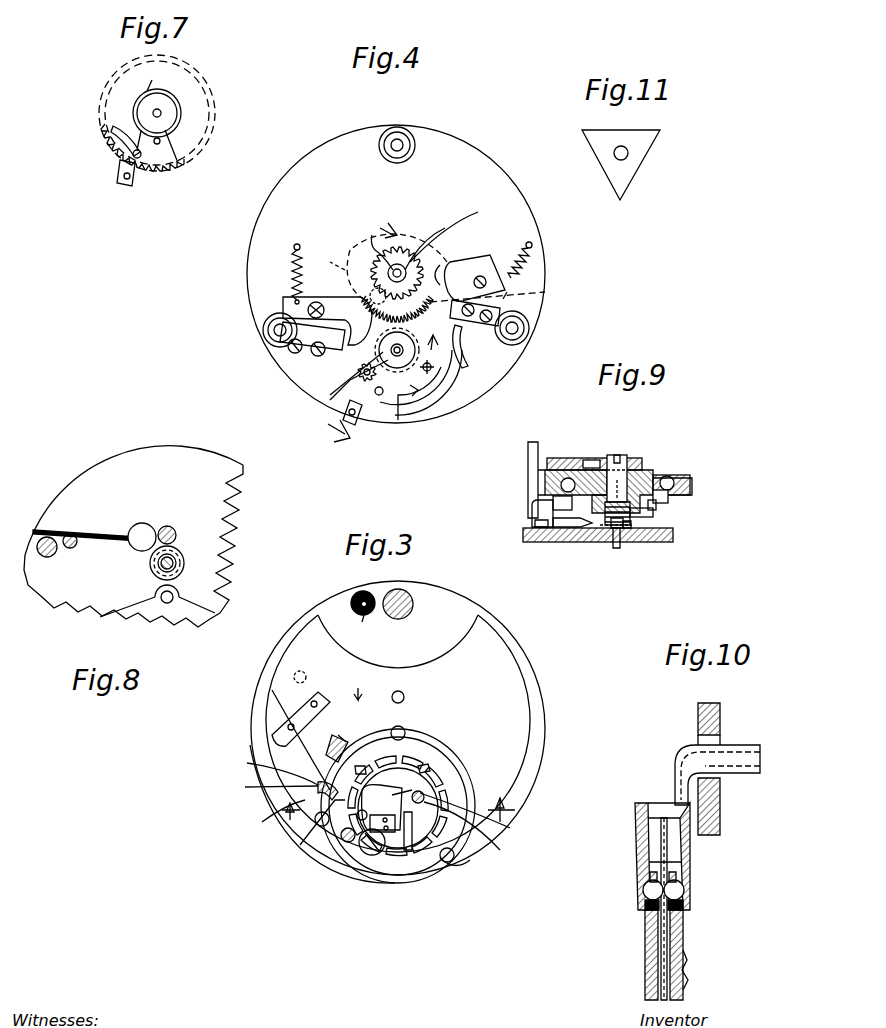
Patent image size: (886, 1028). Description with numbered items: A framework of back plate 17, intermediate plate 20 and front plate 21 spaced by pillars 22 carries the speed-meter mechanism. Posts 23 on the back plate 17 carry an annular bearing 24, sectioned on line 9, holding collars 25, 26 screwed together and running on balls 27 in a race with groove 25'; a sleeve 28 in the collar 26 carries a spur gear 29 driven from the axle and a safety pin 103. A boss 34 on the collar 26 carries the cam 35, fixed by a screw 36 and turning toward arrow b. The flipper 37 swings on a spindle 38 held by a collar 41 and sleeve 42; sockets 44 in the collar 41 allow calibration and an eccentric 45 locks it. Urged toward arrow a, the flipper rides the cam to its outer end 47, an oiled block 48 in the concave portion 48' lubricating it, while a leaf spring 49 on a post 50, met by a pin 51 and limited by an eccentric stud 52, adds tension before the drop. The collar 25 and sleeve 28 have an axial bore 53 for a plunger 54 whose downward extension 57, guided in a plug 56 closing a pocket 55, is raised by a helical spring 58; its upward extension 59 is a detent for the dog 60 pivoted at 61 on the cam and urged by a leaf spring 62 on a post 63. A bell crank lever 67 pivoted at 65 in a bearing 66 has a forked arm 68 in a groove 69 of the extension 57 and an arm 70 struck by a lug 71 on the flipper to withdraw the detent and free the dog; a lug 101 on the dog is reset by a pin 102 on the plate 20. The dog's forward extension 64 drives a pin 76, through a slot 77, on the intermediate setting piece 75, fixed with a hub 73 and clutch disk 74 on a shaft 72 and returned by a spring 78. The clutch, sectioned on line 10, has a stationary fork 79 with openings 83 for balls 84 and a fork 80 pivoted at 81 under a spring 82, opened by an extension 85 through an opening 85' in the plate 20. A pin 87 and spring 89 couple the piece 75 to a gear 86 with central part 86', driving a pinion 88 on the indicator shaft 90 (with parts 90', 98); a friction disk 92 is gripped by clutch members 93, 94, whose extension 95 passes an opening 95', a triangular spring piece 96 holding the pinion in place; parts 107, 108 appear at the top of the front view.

In FIG. 3, the section line 9— 9 is at (398, 814).
In FIG. 4, the section line 10— 10 is at (368, 337).
In FIG. 8, the back plate 17 is at (188, 452).
In FIG. 3, the back plate 17 is at (540, 700).
In FIG. 4, the intermediate plate 20 is at (495, 165).
In FIG. 10, the intermediate plate 20 is at (720, 810).
In FIG. 4, the front plate 21 is at (381, 294).
In FIG. 4, the pillars 22 is at (415, 143).
In FIG. 3, the pillars 22 is at (413, 604).
In FIG. 8, the posts 23 is at (170, 602).
In FIG. 3, the posts 23 is at (403, 728).
In FIG. 9, the annular bearing 24 is at (692, 486).
In FIG. 8, the annular bearing 24 is at (140, 610).
In FIG. 3, the annular bearing 24 is at (440, 752).
In FIG. 9, the collar 25 is at (620, 468).
In FIG. 3, the collar 25 is at (418, 864).
In FIG. 9, the V-shaped groove 25' is at (639, 504).
In FIG. 9, the collar 26 is at (660, 500).
In FIG. 9, the balls 27 is at (568, 448).
In FIG. 3, the balls 27 is at (448, 790).
In FIG. 9, the sleeve 28 is at (645, 515).
In FIG. 9, the spur gear 29 is at (656, 506).
In FIG. 9, the boss 34 is at (620, 456).
In FIG. 3, the boss 34 is at (484, 811).
In FIG. 9, the cam 35 is at (580, 470).
In FIG. 3, the cam 35 is at (340, 815).
In FIG. 3, the screw 36 is at (345, 800).
In FIG. 3, the flipper 37 is at (505, 650).
In FIG. 8, the spindle 38 is at (172, 568).
In FIG. 3, the spindle 38 is at (403, 693).
In FIG. 8, the collar 41 is at (184, 563).
In FIG. 8, the sleeve 42 is at (158, 563).
In FIG. 8, the peripheral sockets 44 is at (178, 553).
In FIG. 8, the eccentric 45 is at (171, 526).
In FIG. 3, the outer end of cam surface 47 is at (322, 800).
In FIG. 3, the block 48 is at (323, 746).
In FIG. 3, the wedge edge 48' is at (338, 726).
In FIG. 8, the leaf spring 49 is at (100, 533).
In FIG. 8, the post 50 is at (142, 523).
In FIG. 8, the pin 51 is at (76, 546).
In FIG. 3, the pin 51 is at (306, 677).
In FIG. 8, the stud 52 is at (47, 558).
In FIG. 9, the axial bore 53 is at (650, 462).
In FIG. 9, the plunger 54 is at (596, 455).
In FIG. 9, the pocket 55 is at (603, 510).
In FIG. 9, the plug 56 is at (623, 522).
In FIG. 9, the downward extension 57 is at (617, 548).
In FIG. 9, the helical spring 58 is at (606, 528).
In FIG. 9, the upward extension (detent) 59 is at (617, 456).
In FIG. 3, the upward extension (detent) 59 is at (412, 790).
In FIG. 9, the dog 60 is at (610, 470).
In FIG. 3, the dog 60 is at (370, 855).
In FIG. 3, the pivot 61 is at (385, 834).
In FIG. 3, the leaf spring 62 is at (380, 788).
In FIG. 3, the post 63 is at (360, 820).
In FIG. 3, the forward extension 64 is at (348, 842).
In FIG. 9, the pivot 65 is at (540, 527).
In FIG. 9, the bearing 66 is at (543, 510).
In FIG. 3, the bearing 66 is at (274, 812).
In FIG. 9, the bell crank lever 67 is at (528, 495).
In FIG. 9, the arm 68 is at (570, 527).
In FIG. 9, the peripheral groove 69 is at (629, 526).
In FIG. 9, the arm 70 is at (528, 460).
In FIG. 3, the arm 70 is at (273, 787).
In FIG. 3, the lug 71 is at (275, 738).
In FIG. 7, the shaft 72 is at (172, 152).
In FIG. 4, the shaft 72 is at (397, 368).
In FIG. 4, the hub 73 is at (340, 388).
In FIG. 4, the clutch disk 74 is at (436, 366).
In FIG. 10, the clutch disk 74 is at (667, 930).
In FIG. 7, the intermediate setting piece 75 is at (150, 133).
In FIG. 4, the intermediate setting piece 75 is at (382, 432).
In FIG. 7, the pin 76 is at (123, 184).
In FIG. 4, the pin 76 is at (355, 425).
In FIG. 3, the pin 76 is at (274, 768).
In FIG. 4, the slot 77 is at (420, 395).
In FIG. 4, the spring 78 is at (430, 392).
In FIG. 4, the stationary fork 79 is at (295, 355).
In FIG. 10, the stationary fork 79 is at (687, 975).
In FIG. 4, the pivoted fork 80 is at (340, 296).
In FIG. 10, the pivoted fork 80 is at (635, 810).
In FIG. 4, the pivot 81 is at (318, 300).
In FIG. 4, the spring 82 is at (293, 272).
In FIG. 10, the openings 83 is at (683, 903).
In FIG. 10, the clutch balls 84 is at (643, 890).
In FIG. 4, the extension 85 is at (389, 265).
In FIG. 3, the extension 85 is at (368, 745).
In FIG. 10, the extension 85 is at (704, 774).
In FIG. 4, the lever end 85' is at (325, 258).
In FIG. 10, the lever end 85' is at (730, 726).
In FIG. 7, the gear 86 is at (168, 113).
In FIG. 7, the hub 86' is at (189, 108).
In FIG. 7, the pin 87 is at (160, 125).
In FIG. 4, the pin 87 is at (340, 400).
In FIG. 7, the pinion 88 is at (118, 150).
In FIG. 4, the spring 89 is at (445, 228).
In FIG. 4, the shaft 90 is at (397, 248).
In FIG. 4, the arm 90' is at (456, 229).
In FIG. 4, the friction disk 92 is at (478, 238).
In FIG. 4, the clutch member 93 is at (500, 300).
In FIG. 4, the clutch member 94 is at (510, 256).
In FIG. 4, the rearward extension 95 is at (516, 246).
In FIG. 3, the rearward extension 95 is at (437, 748).
In FIG. 4, the opening 95' is at (503, 279).
In FIG. 11, the triangular spring piece 96 is at (637, 168).
In FIG. 4, the arm 98 is at (372, 235).
In FIG. 3, the lug 101 is at (462, 862).
In FIG. 3, the pin 102 is at (500, 850).
In FIG. 9, the pin 103 is at (650, 535).
In FIG. 3, the pin 107 is at (370, 627).
In FIG. 3, the button 108 is at (352, 598).
In FIG. 3, the arrow a is at (354, 687).
In FIG. 3, the arrow b is at (398, 835).